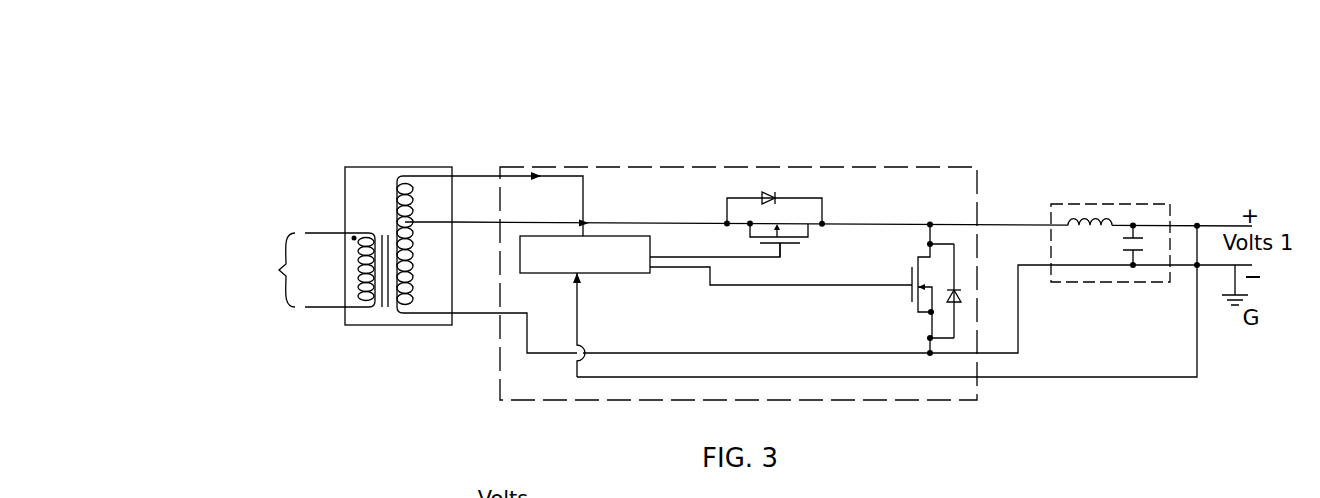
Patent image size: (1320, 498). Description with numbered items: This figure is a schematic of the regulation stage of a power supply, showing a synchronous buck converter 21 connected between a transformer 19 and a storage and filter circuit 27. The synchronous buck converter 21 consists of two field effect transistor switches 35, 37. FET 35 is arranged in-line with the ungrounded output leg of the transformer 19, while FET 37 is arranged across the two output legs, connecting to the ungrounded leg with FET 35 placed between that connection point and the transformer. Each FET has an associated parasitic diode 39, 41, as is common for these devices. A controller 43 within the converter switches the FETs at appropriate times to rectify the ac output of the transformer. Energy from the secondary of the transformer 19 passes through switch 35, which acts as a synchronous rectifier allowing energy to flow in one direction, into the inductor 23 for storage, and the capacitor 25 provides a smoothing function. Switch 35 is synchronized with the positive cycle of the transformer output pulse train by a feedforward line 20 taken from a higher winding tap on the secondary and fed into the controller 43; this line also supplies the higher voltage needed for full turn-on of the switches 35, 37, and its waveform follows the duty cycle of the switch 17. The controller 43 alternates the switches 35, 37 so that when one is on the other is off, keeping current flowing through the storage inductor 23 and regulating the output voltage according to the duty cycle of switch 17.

The switch 17 is at (270, 267).
The transformer 19 is at (413, 167).
The feedforward line 20 is at (472, 176).
The synchronous buck converter 21 is at (890, 118).
The inductor 23 is at (1093, 206).
The capacitor 25 is at (1120, 247).
The storage and filter circuit 27 is at (1134, 200).
The field effect transistor switch 35 is at (790, 232).
The field effect transistor switch 37 is at (905, 297).
The parasitic diode 39 is at (765, 192).
The parasitic diode 41 is at (970, 293).
The controller 43 is at (595, 273).